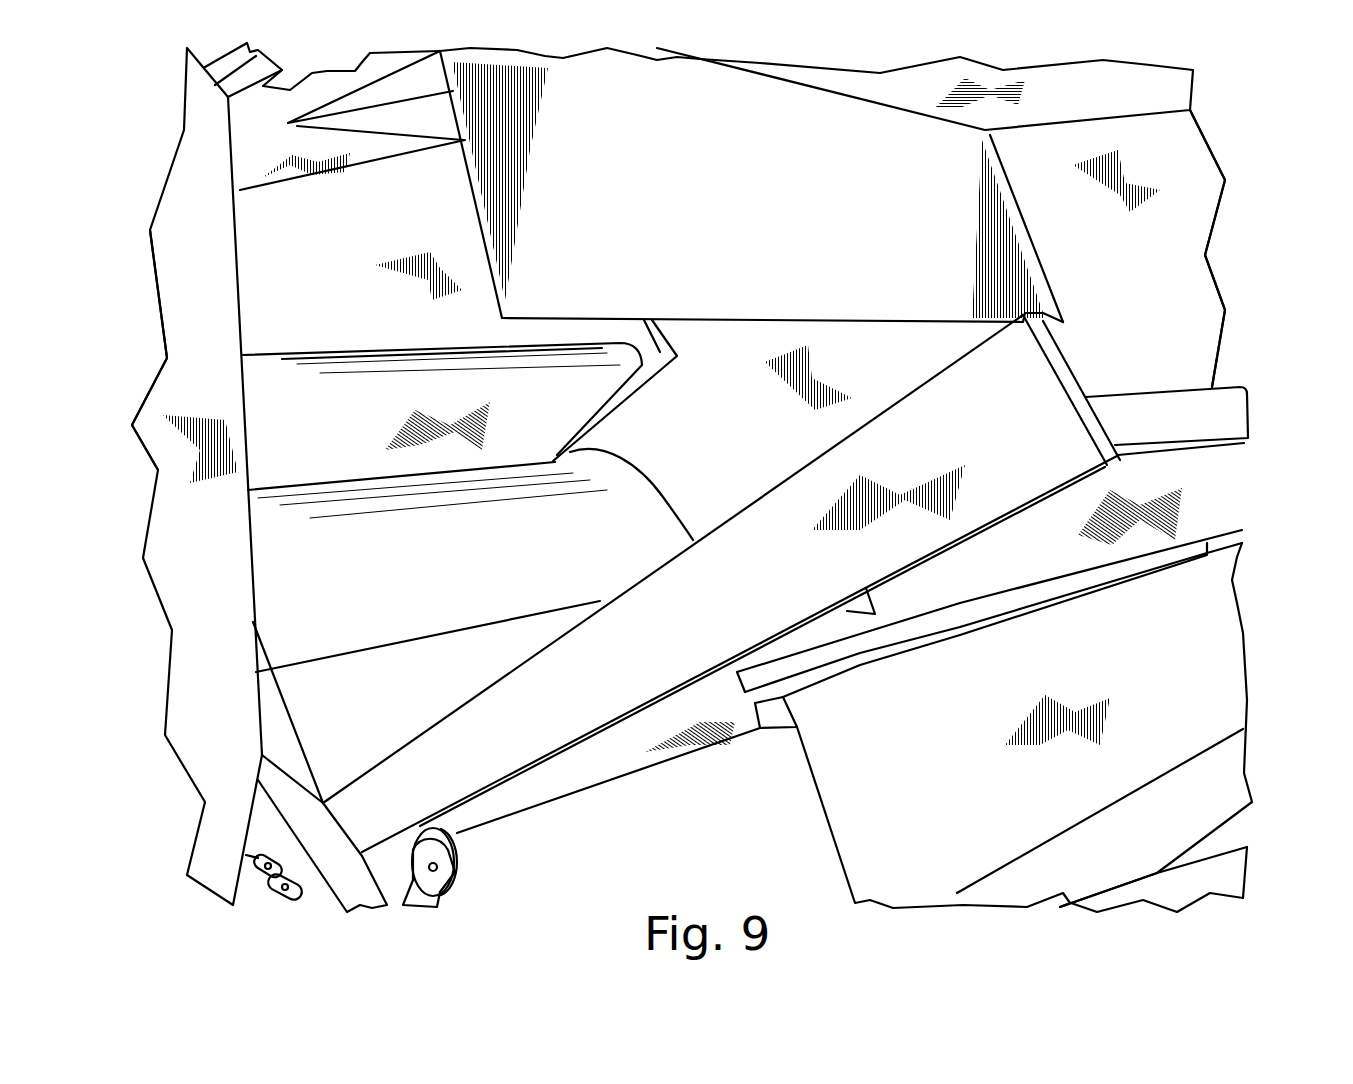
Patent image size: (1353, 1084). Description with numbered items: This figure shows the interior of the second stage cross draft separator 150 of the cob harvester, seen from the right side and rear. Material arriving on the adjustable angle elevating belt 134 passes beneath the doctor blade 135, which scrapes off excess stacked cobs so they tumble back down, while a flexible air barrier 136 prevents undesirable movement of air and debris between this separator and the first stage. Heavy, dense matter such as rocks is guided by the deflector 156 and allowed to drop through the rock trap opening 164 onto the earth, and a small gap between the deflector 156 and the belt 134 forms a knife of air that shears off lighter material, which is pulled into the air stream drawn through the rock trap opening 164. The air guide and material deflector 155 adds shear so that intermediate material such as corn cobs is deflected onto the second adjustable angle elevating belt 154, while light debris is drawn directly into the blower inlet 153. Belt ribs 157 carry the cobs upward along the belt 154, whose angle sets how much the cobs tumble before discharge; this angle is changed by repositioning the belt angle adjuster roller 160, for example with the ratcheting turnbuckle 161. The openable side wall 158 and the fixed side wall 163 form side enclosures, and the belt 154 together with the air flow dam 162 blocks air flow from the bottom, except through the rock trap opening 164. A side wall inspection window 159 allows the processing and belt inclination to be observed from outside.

The adjustable angle elevating belt 134 is at (620, 400).
The doctor blade 135 is at (258, 313).
The flexible air barrier 136 is at (250, 165).
The second stage cross draft separator 150 is at (1243, 158).
The blower inlet 153 is at (1147, 90).
The adjustable angle elevating belt 154 is at (1215, 387).
The air guide and material deflector 155 is at (712, 206).
The deflector 156 is at (637, 498).
The belt ribs 157 is at (1250, 438).
The openable side wall 158 is at (216, 549).
The side wall inspection window 159 is at (193, 378).
The belt angle adjuster roller 160 is at (462, 853).
The ratcheting turnbuckle 161 is at (256, 857).
The air flow dam 162 is at (930, 761).
The fixed side wall 163 is at (1166, 272).
The rock trap opening 164 is at (292, 690).